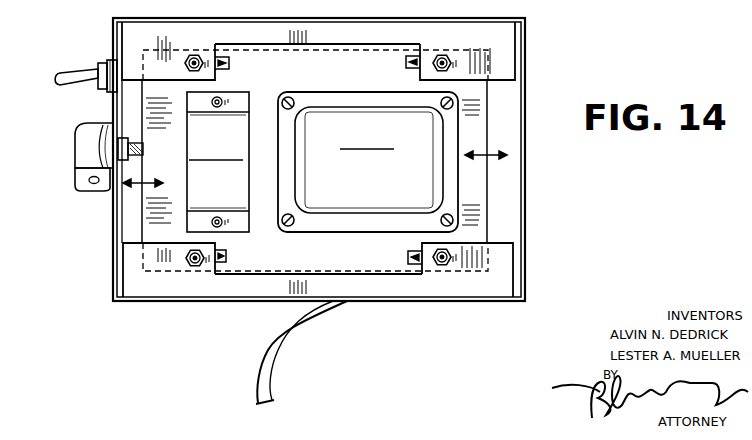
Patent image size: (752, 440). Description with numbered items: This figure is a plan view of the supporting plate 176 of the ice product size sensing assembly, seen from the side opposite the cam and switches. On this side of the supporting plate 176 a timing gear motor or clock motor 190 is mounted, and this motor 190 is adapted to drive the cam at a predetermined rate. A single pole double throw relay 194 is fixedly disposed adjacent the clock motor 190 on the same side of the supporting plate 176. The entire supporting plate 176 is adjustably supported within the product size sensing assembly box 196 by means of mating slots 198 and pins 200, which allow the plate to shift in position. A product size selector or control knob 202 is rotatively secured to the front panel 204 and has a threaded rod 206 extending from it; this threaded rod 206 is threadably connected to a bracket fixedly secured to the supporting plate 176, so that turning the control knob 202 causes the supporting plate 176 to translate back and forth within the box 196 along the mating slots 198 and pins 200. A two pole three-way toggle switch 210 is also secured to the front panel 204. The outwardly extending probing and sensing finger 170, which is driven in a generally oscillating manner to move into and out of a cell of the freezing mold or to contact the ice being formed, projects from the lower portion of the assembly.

The probing and sensing finger 170 is at (270, 350).
The supporting plate 176 is at (329, 75).
The clock motor 190 is at (388, 188).
The single pole double throw relay 194 is at (236, 193).
The product size sensing assembly box 196 is at (533, 78).
The slots 198 is at (229, 63).
The pins 200 is at (194, 56).
The product size selector or control knob 202 is at (86, 146).
The front panel 204 is at (113, 210).
The threaded rod 206 is at (144, 148).
The two pole three-way toggle switch 210 is at (66, 72).